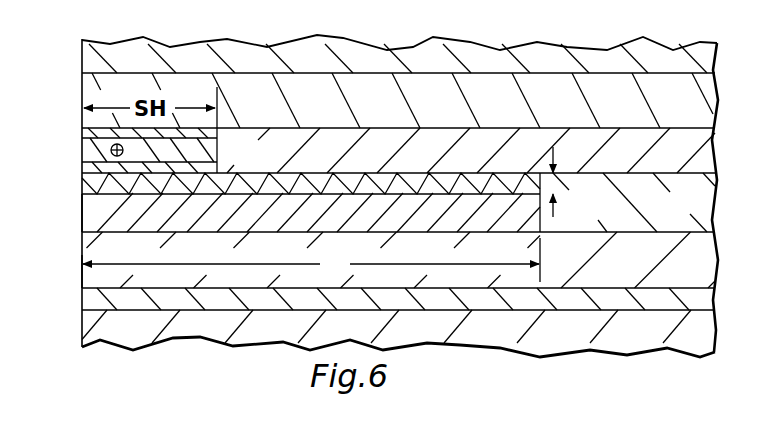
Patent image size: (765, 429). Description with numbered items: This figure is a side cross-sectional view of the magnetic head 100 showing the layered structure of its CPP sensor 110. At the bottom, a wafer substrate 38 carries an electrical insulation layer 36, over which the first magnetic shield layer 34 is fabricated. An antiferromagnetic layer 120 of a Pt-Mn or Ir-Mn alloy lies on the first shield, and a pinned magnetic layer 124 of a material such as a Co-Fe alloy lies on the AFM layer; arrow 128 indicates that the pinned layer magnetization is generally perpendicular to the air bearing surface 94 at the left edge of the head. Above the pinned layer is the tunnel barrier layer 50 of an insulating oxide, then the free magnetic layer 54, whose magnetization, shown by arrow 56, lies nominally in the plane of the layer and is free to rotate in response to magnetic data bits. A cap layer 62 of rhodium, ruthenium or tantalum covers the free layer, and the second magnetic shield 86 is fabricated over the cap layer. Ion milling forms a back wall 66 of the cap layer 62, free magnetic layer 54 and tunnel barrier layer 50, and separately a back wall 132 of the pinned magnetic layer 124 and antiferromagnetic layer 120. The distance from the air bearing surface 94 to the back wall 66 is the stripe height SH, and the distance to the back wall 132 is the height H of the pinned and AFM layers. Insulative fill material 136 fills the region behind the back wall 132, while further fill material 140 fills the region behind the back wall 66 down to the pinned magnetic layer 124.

The magnetic head 100 is at (74, 57).
The CPP sensor 110 is at (165, 37).
The second magnetic shield 86 is at (389, 107).
The cap layer 62 is at (222, 118).
The back wall 66 is at (218, 150).
The fill material 140 is at (472, 168).
The magnetization direction arrow of free magnetic layer 56 is at (110, 133).
The free magnetic layer 54 is at (92, 148).
The tunnel barrier layer 50 is at (92, 167).
The magnetization direction arrow of pinned magnetic layer 128 is at (147, 183).
The pinned magnetic layer 124 is at (97, 211).
The antiferromagnetic layer 120 is at (80, 219).
The first magnetic shield layer 34 is at (215, 261).
The air bearing surface 94 is at (81, 268).
The electrical insulation layer 36 is at (92, 298).
The wafer substrate 38 is at (90, 323).
The back wall 132 is at (542, 218).
The insulative fill material 136 is at (692, 217).